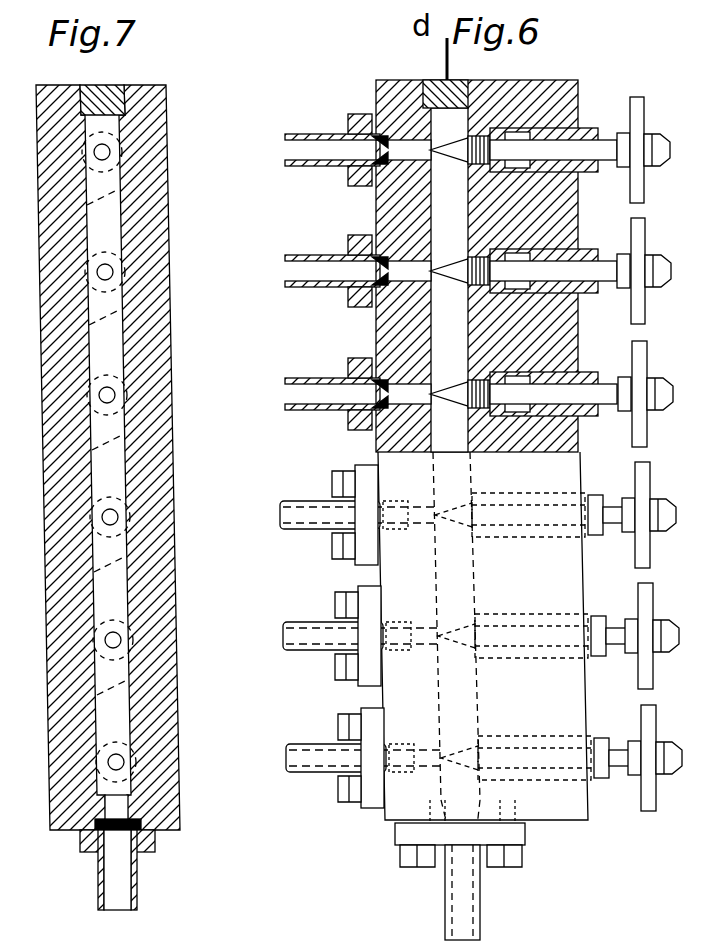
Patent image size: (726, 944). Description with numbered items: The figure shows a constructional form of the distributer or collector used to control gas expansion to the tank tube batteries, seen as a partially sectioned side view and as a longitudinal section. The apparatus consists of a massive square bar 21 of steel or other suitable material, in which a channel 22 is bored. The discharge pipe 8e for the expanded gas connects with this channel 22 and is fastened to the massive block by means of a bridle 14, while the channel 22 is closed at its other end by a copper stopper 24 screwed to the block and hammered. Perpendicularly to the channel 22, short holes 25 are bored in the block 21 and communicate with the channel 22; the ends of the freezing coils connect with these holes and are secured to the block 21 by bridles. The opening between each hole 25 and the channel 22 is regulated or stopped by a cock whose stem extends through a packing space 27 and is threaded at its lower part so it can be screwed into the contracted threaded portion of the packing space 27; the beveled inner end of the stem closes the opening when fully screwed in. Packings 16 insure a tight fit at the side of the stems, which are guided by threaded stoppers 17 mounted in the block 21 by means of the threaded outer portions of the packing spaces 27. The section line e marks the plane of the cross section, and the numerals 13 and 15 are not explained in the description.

In FIG. 7, the discharge pipe 8e is at (118, 888).
In FIG. 6, the discharge pipe 8e is at (458, 882).
In FIG. 6, the pipe flange 13 is at (360, 779).
In FIG. 7, the bridle 14 is at (150, 842).
In FIG. 6, the bridle 14 is at (518, 836).
In FIG. 6, the nozzle 15 is at (450, 353).
In FIG. 6, the packing 16 is at (466, 415).
In FIG. 6, the threaded stopper 17 is at (556, 230).
In FIG. 7, the massive square bar 21 is at (153, 442).
In FIG. 6, the massive square bar 21 is at (384, 440).
In FIG. 7, the channel 22 is at (110, 337).
In FIG. 6, the channel 22 is at (440, 192).
In FIG. 7, the copper stopper 24 is at (108, 100).
In FIG. 6, the copper stopper 24 is at (430, 82).
In FIG. 7, the short hole 25 is at (104, 153).
In FIG. 6, the packing space 27 is at (535, 126).
In FIG. 6, the section line e is at (346, 750).